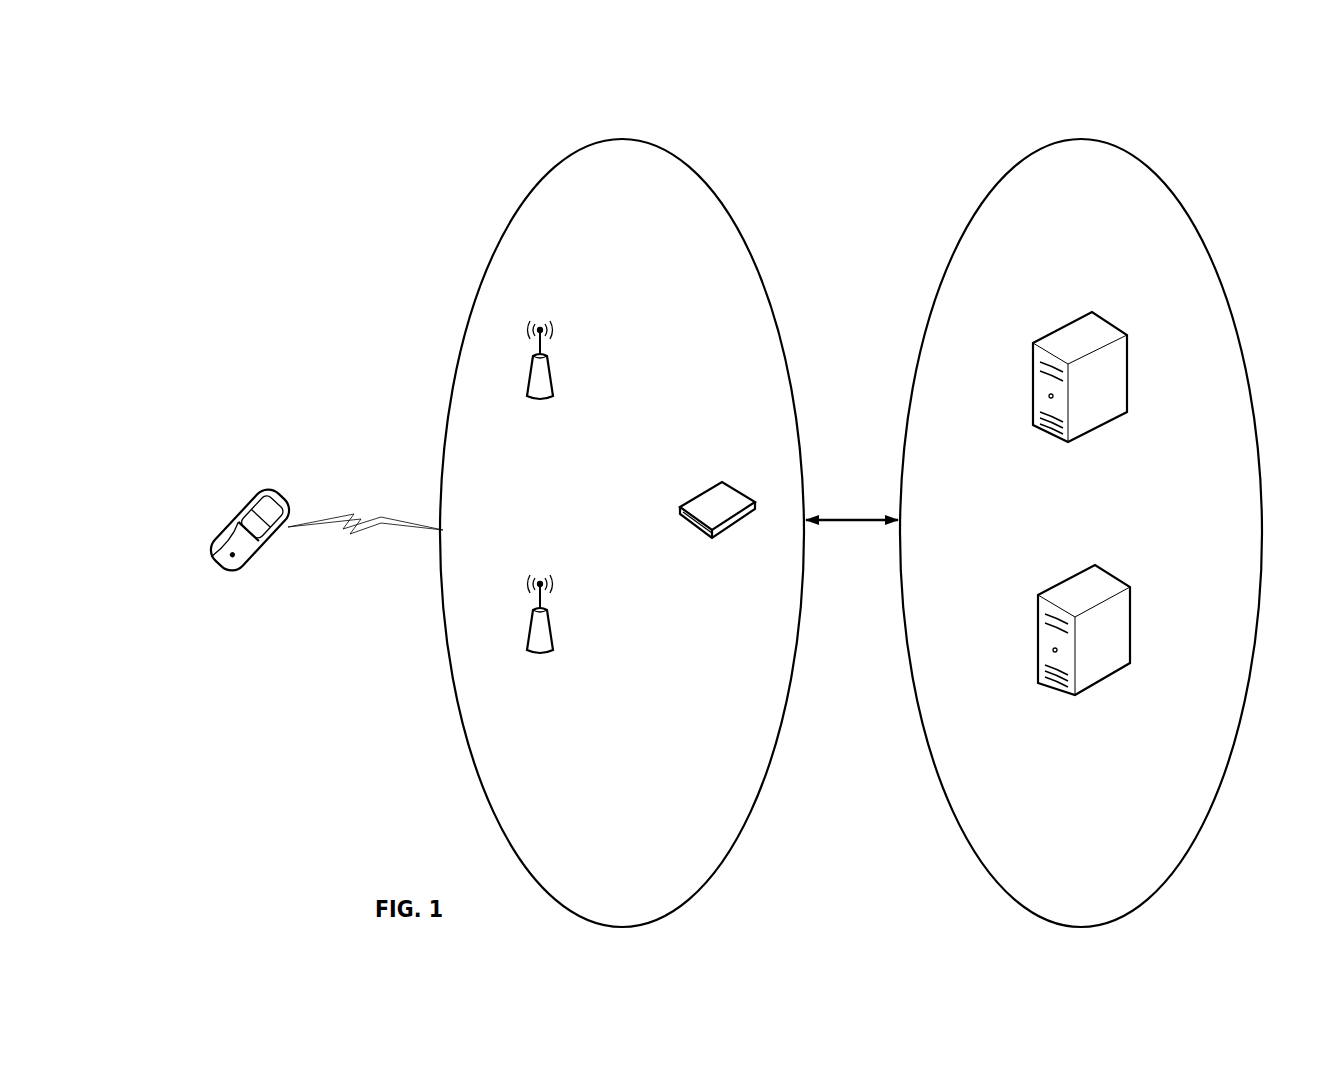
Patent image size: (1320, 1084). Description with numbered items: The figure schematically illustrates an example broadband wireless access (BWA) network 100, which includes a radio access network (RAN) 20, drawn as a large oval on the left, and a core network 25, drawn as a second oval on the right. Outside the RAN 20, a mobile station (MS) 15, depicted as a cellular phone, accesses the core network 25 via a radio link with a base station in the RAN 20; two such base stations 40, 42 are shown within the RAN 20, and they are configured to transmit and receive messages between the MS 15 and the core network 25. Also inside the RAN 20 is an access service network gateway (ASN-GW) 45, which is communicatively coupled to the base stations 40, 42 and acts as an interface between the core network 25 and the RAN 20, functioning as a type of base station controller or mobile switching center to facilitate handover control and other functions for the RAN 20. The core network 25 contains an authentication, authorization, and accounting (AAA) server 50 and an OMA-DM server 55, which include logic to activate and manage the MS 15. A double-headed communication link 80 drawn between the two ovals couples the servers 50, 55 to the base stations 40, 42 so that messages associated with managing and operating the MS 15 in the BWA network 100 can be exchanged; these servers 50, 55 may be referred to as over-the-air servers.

The broadband wireless access (BWA) network 100 is at (852, 104).
The mobile station (MS) 15 is at (273, 492).
The radio access network (RAN) 20 is at (726, 860).
The core network 25 is at (1166, 880).
The base station (BS) 40 is at (556, 364).
The base station (BS) 42 is at (561, 635).
The access service network gateway (ASN-GW) 45 is at (713, 470).
The authentication, authorization, and accounting (AAA) server 50 is at (1088, 282).
The OMA-DM server 55 is at (1122, 546).
The communication link 80 is at (833, 527).